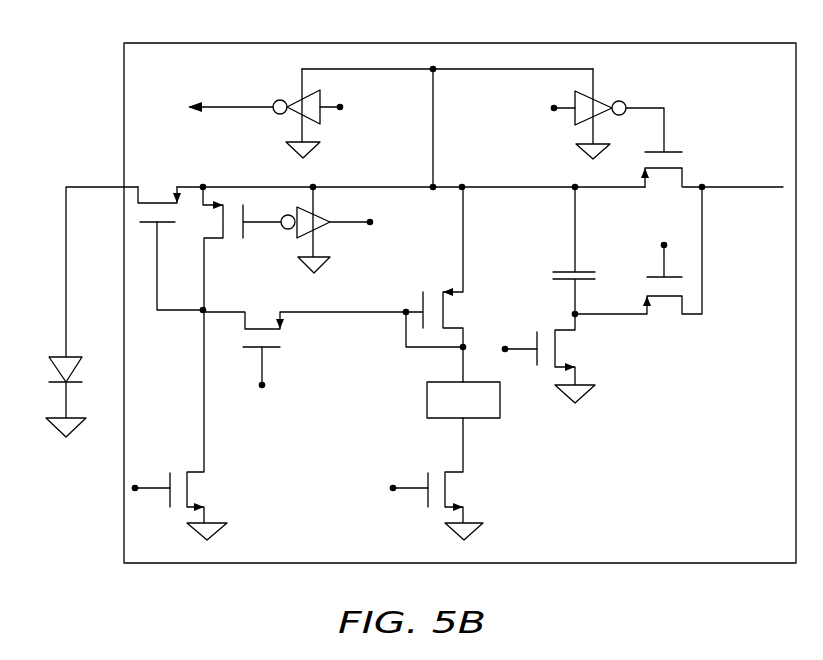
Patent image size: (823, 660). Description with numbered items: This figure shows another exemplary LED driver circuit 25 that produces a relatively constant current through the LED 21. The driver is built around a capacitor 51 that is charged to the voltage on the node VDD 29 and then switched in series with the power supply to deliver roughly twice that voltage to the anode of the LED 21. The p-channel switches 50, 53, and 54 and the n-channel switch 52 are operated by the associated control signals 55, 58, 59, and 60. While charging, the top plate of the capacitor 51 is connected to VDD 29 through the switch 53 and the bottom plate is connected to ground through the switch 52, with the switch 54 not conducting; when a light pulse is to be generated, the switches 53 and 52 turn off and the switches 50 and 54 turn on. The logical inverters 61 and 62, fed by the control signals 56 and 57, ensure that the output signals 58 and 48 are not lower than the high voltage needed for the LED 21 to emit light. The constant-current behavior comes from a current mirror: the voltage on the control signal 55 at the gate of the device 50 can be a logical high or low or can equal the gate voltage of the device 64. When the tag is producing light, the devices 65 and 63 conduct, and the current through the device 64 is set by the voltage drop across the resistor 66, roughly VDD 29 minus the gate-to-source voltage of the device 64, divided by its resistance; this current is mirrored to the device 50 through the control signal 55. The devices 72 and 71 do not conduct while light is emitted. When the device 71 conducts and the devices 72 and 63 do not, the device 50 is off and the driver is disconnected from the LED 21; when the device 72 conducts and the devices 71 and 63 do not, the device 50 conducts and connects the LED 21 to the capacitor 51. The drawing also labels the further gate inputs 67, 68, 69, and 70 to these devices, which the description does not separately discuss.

The LED 21 is at (53, 358).
The LED driver circuit 25 is at (590, 43).
The VDD 29 is at (740, 190).
The output signal 48 is at (232, 102).
The switch 50 is at (160, 202).
The capacitor (C3) 51 is at (582, 272).
The switch 52 is at (557, 345).
The switch 53 is at (670, 170).
The switch 54 is at (663, 300).
The control signal 55 is at (158, 277).
The control signal 56 is at (334, 105).
The control signal 57 is at (552, 106).
The control signal 58 is at (667, 130).
The control signal 59 is at (663, 262).
The control signal 60 is at (505, 347).
The logical inverter 61 is at (322, 117).
The logical inverter 62 is at (575, 118).
The device 63 is at (267, 328).
The device 64 is at (445, 308).
The device 65 is at (448, 492).
The resistor (R3) 66 is at (483, 418).
The inverter output 67 is at (343, 218).
The gate input 68 is at (157, 483).
The gate input 69 is at (263, 367).
The gate input 70 is at (405, 483).
The device 71 is at (220, 213).
The device 72 is at (188, 492).